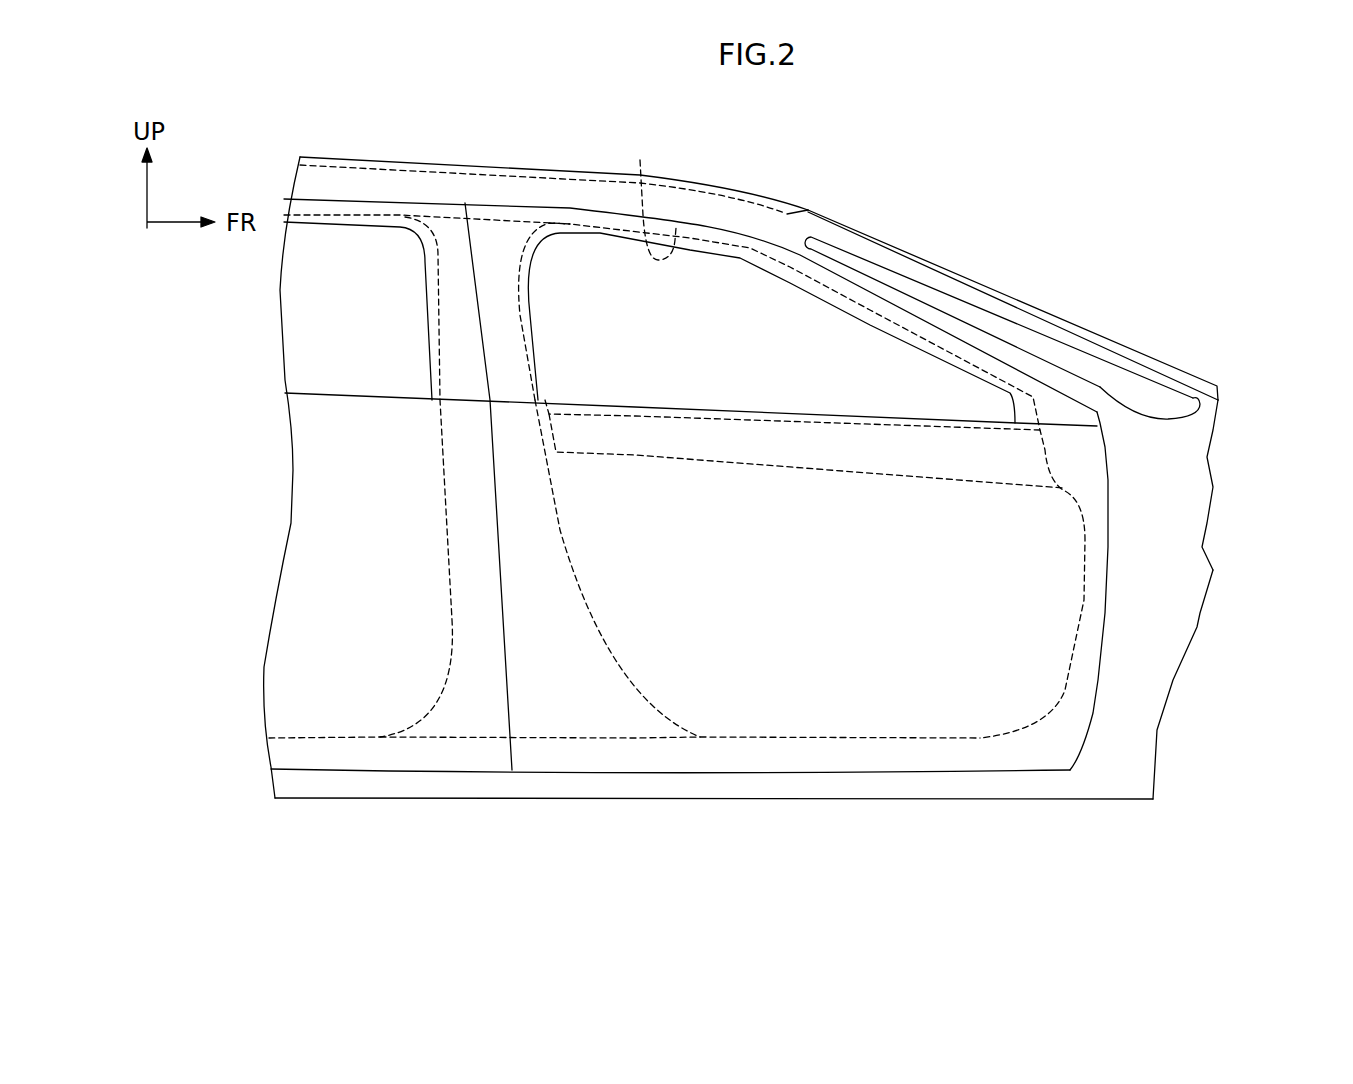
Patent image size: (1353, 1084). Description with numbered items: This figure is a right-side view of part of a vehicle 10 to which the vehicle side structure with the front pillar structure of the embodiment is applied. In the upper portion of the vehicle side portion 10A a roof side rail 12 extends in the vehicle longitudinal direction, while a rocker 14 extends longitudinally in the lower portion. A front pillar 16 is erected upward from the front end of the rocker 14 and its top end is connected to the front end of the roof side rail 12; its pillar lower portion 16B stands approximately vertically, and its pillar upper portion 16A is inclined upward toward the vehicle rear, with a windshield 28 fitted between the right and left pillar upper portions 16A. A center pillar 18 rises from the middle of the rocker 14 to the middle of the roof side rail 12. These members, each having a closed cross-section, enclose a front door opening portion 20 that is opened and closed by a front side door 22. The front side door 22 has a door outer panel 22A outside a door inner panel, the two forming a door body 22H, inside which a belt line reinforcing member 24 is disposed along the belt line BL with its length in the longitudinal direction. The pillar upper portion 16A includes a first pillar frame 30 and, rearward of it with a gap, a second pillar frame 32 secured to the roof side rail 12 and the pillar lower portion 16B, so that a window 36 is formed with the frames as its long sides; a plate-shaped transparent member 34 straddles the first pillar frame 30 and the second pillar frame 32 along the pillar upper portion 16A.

The vehicle 10 is at (1057, 193).
The vehicle side portion 10A is at (440, 150).
The roof side rail 12 is at (460, 185).
The rocker 14 is at (486, 788).
The front pillar 16 is at (1190, 490).
The pillar upper portion 16A is at (1078, 325).
The pillar lower portion 16B is at (1177, 590).
The center pillar 18 is at (560, 530).
The front door opening portion 20 is at (651, 196).
The front side door 22 is at (733, 559).
The door outer panel 22A is at (1090, 623).
The door body 22H is at (691, 389).
The belt line reinforcing member 24 is at (795, 472).
The windshield 28 is at (1011, 308).
The first pillar frame 30 is at (1017, 307).
The second pillar frame 32 is at (962, 345).
The transparent member 34 is at (975, 318).
The window 36 is at (1088, 356).
The belt line BL is at (690, 407).